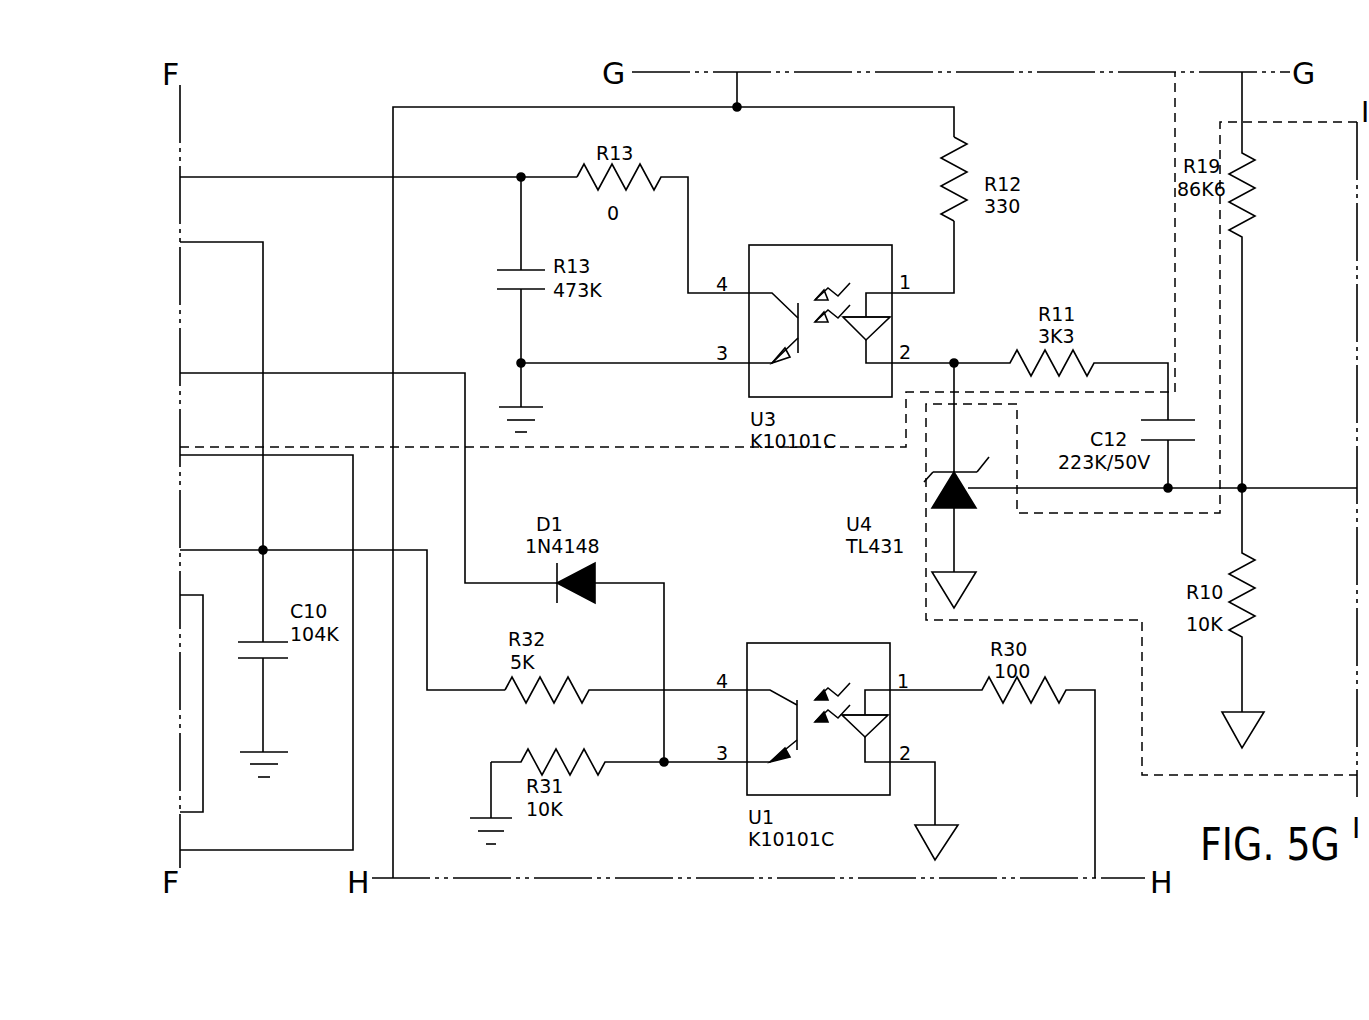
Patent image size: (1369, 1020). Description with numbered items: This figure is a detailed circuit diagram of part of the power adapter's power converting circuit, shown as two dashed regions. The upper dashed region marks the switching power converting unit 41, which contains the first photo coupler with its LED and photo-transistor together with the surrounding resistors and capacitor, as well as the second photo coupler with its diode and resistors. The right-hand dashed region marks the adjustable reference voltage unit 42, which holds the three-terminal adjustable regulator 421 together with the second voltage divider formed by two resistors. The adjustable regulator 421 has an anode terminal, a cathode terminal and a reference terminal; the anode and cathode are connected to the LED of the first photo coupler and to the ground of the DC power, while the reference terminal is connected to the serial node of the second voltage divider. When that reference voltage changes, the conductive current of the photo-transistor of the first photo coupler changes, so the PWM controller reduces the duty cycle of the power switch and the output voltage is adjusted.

The switching power converting unit 41 is at (212, 450).
The adjustable reference voltage unit 42 is at (1280, 122).
The three-terminal adjustable regulator 421 is at (963, 505).